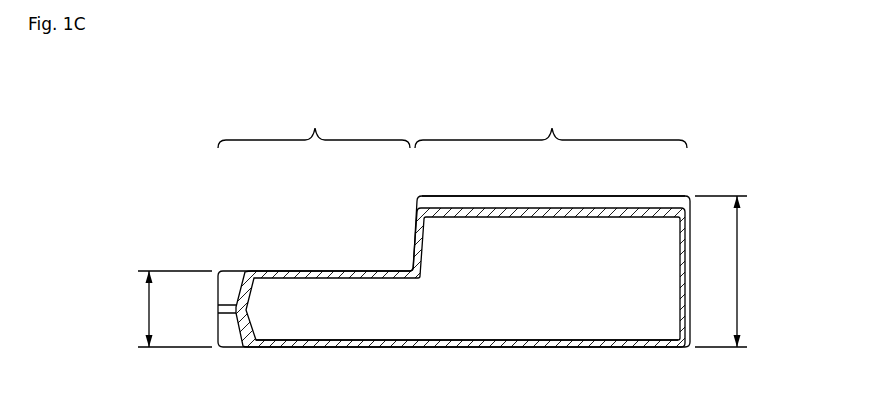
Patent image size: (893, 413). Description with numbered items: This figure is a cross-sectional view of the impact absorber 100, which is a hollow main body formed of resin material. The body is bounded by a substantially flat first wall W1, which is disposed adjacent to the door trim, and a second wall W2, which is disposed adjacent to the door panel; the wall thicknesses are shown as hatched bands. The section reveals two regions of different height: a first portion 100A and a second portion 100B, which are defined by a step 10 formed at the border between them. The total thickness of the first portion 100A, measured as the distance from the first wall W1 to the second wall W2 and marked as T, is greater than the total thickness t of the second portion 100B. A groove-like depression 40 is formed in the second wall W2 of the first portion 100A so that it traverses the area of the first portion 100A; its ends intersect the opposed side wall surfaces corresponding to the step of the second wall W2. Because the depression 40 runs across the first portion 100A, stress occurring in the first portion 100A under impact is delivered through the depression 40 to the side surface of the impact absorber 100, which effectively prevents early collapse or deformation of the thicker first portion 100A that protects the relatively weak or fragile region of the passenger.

The impact absorber 100 is at (495, 243).
The first portion 100A is at (551, 125).
The second portion 100B is at (314, 125).
The step 10 is at (413, 238).
The groove-like depression 40 is at (465, 203).
The first wall W1 is at (562, 348).
The second wall W2 is at (319, 268).
The total thickness of the first portion T is at (730, 271).
The total thickness of the second portion t is at (167, 309).